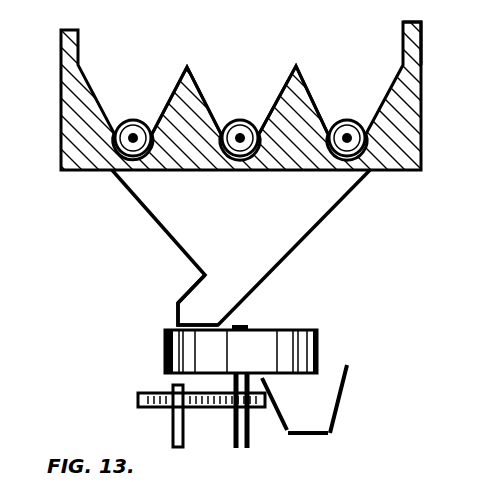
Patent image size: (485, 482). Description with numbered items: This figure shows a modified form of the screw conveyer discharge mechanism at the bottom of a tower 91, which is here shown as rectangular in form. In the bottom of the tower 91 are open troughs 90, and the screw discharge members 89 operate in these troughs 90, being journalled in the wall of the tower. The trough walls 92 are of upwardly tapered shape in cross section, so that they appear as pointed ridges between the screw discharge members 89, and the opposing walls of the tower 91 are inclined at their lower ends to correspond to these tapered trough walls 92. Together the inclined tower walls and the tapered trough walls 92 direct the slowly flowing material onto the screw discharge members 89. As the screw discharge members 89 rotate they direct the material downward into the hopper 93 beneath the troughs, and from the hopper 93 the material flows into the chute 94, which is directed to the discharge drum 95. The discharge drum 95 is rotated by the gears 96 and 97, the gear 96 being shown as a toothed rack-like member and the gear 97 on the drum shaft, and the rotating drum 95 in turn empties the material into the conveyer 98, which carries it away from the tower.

The screw discharge members 89 is at (133, 138).
The open troughs 90 is at (117, 109).
The tower 91 is at (422, 62).
The trough walls 92 is at (200, 92).
The hopper 93 is at (297, 250).
The chute 94 is at (180, 295).
The discharge drum 95 is at (317, 352).
The gear 96 is at (138, 407).
The gear 97 is at (227, 407).
The conveyer 98 is at (320, 437).